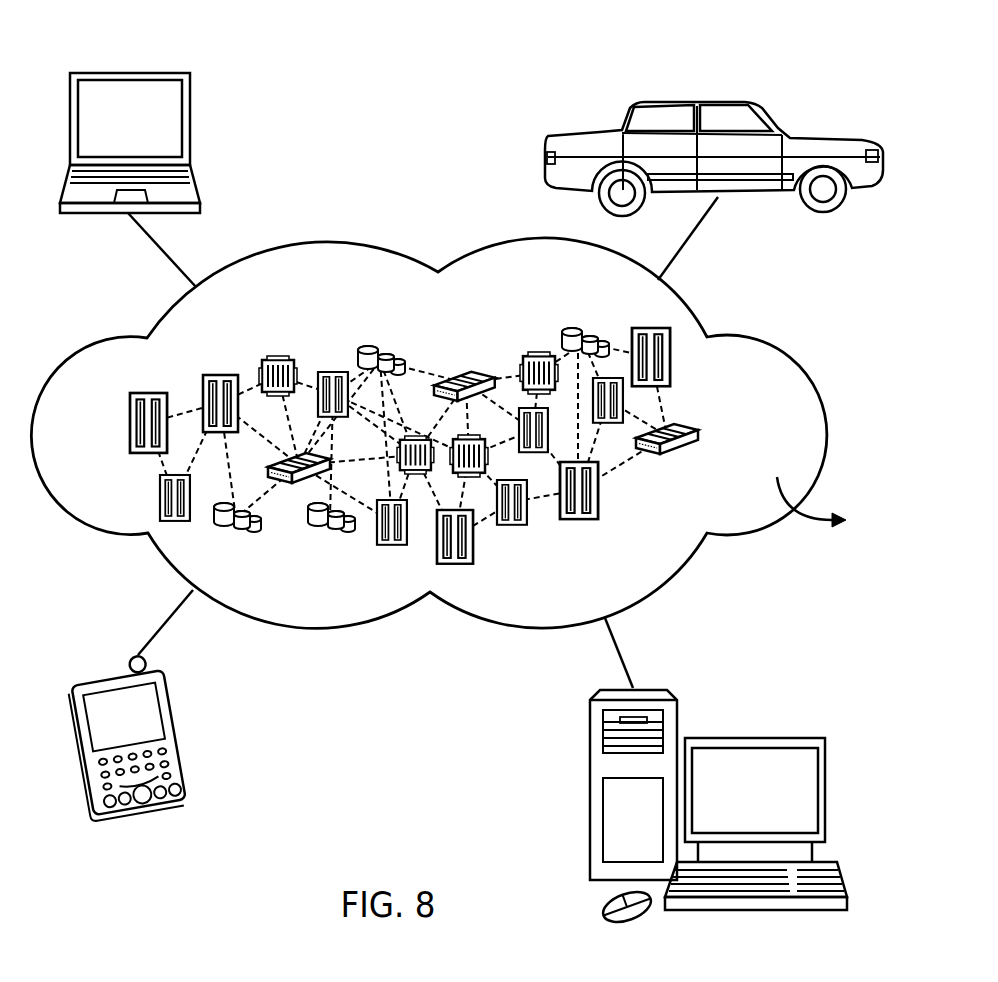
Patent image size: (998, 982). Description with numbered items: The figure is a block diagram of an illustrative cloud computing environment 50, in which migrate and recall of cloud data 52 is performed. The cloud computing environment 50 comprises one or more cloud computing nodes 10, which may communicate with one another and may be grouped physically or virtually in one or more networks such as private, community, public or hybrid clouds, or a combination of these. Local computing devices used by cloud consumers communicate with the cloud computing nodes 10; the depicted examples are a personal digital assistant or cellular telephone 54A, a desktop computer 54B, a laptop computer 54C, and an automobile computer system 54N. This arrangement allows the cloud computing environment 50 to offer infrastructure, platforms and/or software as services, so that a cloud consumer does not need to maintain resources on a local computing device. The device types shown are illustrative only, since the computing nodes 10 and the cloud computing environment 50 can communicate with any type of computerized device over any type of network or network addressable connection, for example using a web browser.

The cloud computing node 10 is at (717, 440).
The cloud computing environment 50 is at (768, 343).
The migrate and recall of cloud data 52 is at (895, 470).
The personal digital assistant or cellular telephone 54A is at (110, 673).
The desktop computer 54B is at (753, 737).
The laptop computer 54C is at (130, 73).
The automobile computer system 54N is at (692, 100).